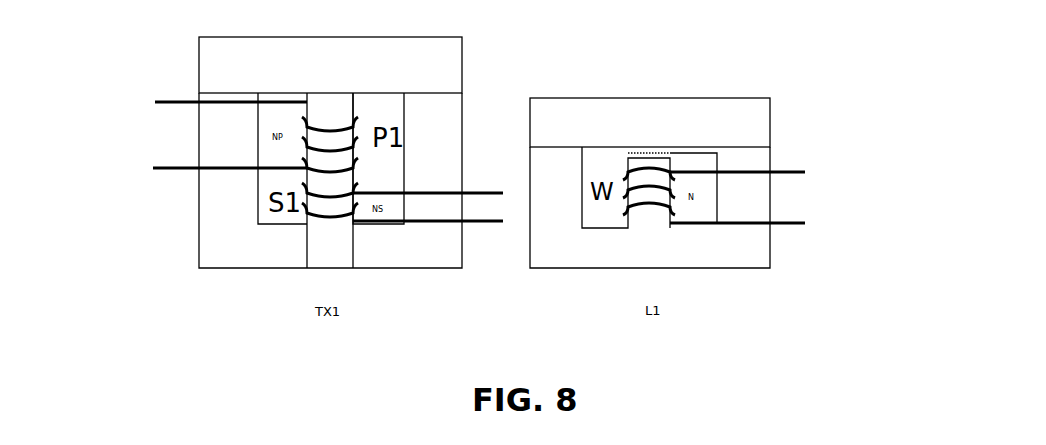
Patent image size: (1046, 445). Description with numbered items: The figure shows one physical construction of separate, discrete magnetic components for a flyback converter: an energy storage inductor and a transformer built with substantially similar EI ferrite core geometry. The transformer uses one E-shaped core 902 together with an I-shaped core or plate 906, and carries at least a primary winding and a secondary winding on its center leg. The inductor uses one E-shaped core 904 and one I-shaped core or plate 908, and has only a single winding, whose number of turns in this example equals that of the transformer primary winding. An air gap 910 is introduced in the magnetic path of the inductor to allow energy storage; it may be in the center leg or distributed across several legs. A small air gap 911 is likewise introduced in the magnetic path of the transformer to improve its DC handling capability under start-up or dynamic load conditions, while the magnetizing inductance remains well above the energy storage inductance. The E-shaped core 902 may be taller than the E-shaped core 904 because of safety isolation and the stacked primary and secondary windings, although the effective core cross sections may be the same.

The E-shaped core 902 is at (199, 243).
The E-shaped core 904 is at (770, 248).
The I-shaped core 906 is at (199, 56).
The I-shaped core 908 is at (770, 118).
The air gap 910 is at (717, 154).
The air gap 911 is at (330, 91).